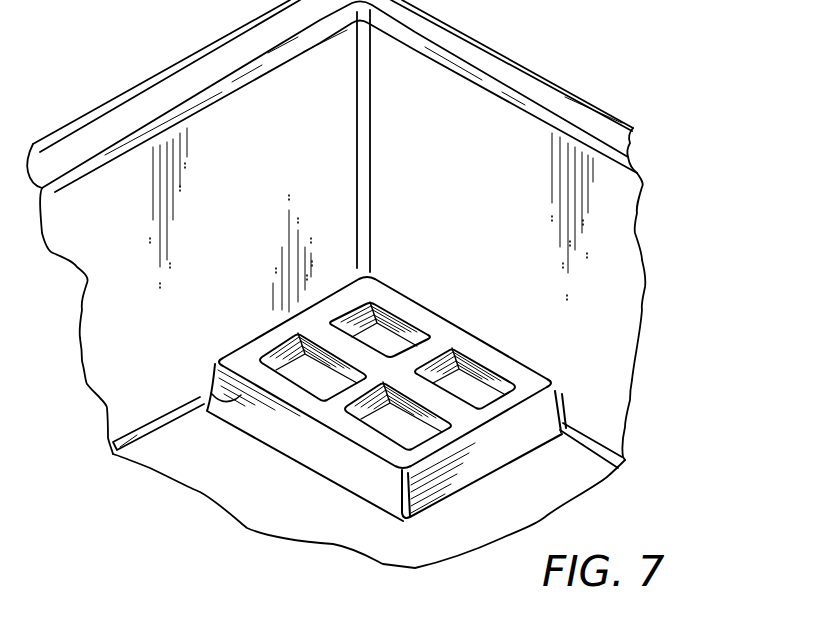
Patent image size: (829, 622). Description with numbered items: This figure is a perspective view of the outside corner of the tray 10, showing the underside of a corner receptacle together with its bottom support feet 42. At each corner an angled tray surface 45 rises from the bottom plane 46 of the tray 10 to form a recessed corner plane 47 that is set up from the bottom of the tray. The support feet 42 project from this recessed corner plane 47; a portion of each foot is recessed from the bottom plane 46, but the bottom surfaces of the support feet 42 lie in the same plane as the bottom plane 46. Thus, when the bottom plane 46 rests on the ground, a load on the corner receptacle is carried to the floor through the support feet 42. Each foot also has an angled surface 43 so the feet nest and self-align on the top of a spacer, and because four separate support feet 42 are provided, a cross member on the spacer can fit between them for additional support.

The tray 10 is at (648, 343).
The bottom support feet 42 is at (486, 396).
The angled surface 43 is at (393, 325).
The angled tray surface 45 is at (208, 383).
The bottom plane 46 is at (246, 481).
The recessed corner plane 47 is at (300, 323).